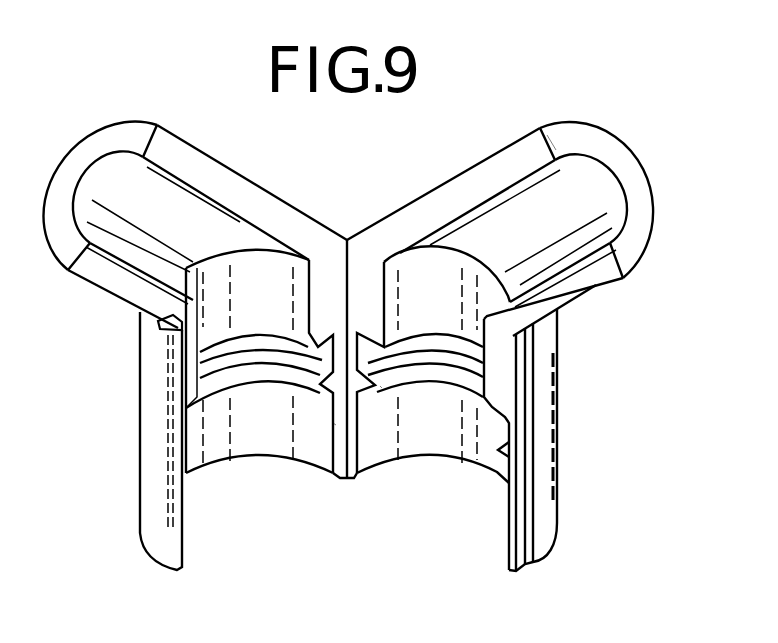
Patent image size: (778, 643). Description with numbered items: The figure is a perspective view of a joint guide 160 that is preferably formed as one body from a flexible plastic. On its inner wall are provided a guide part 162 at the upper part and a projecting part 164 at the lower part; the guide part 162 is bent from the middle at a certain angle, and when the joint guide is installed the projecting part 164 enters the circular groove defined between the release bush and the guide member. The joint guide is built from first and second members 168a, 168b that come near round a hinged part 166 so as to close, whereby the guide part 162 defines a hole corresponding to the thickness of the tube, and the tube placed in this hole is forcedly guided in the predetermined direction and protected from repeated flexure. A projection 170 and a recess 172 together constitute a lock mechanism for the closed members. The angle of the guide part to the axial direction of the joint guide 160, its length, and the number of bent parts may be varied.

The joint guide 160 is at (140, 402).
The guide part 162 is at (577, 283).
The projecting part 164 is at (380, 386).
The hinged part 166 is at (336, 425).
The first member 168a is at (540, 504).
The second member 168b is at (160, 518).
The projection 170 is at (168, 324).
The recess 172 is at (533, 338).